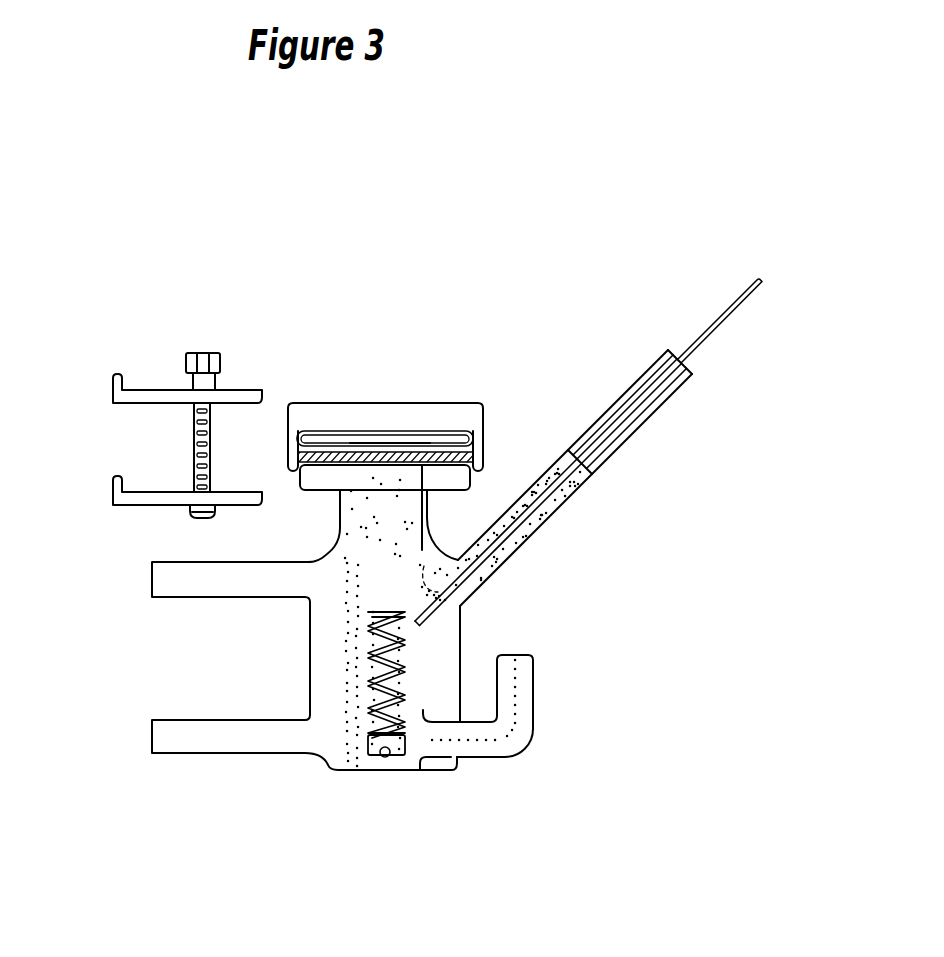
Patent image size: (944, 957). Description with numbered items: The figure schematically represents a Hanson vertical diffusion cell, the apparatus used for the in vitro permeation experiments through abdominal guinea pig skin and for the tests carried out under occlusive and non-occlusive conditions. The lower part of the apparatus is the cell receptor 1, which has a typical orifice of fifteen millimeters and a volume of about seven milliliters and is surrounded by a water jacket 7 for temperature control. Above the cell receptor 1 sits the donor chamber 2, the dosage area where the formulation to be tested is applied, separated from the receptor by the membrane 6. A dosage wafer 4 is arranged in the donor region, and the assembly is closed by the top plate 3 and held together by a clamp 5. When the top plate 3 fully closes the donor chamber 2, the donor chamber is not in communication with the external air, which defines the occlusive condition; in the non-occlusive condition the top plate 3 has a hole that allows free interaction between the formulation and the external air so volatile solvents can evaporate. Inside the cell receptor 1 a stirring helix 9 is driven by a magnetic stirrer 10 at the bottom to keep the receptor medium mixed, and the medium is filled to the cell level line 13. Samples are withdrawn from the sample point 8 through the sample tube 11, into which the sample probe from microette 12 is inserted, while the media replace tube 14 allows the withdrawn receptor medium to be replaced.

The cell receptor 1 is at (378, 569).
The donor chamber 2 is at (360, 441).
The top plate 3 is at (388, 412).
The dosage wafer 4 is at (298, 431).
The clamp 5 is at (113, 391).
The membrane 6 is at (332, 458).
The water jacket 7 is at (210, 598).
The sample point 8 is at (413, 612).
The stirring helix 9 is at (372, 686).
The magnetic stirrer 10 is at (381, 757).
The sample tube 11 is at (506, 560).
The sample probe from microette 12 is at (720, 318).
The cell level line 13 is at (568, 450).
The media replace tube 14 is at (533, 680).